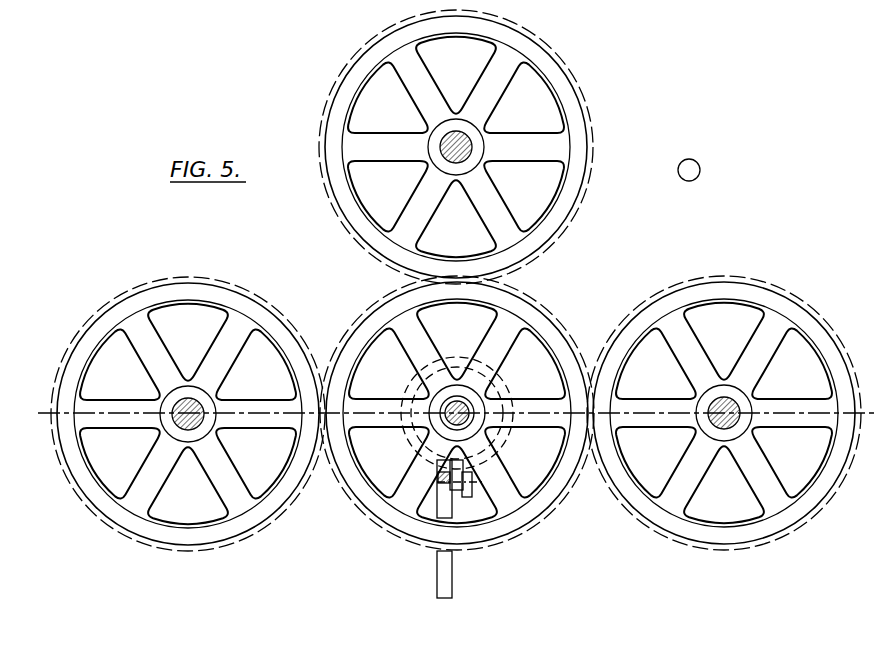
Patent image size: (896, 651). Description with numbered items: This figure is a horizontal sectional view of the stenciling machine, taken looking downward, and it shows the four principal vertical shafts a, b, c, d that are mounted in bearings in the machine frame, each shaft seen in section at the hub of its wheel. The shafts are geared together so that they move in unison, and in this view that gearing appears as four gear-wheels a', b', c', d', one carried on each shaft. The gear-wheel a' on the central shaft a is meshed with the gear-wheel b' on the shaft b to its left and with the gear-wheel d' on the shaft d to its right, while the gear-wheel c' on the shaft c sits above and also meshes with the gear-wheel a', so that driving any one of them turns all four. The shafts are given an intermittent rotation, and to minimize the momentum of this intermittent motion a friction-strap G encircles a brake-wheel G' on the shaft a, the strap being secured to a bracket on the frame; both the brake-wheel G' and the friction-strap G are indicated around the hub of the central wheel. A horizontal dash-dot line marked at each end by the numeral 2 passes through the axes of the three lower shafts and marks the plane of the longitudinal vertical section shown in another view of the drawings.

The section line 2 2 is at (454, 414).
The principal shaft a is at (475, 402).
The gear-wheel a' is at (457, 413).
The principal shaft b is at (203, 408).
The gear-wheel b' is at (188, 414).
The principal shaft c is at (469, 143).
The gear-wheel c' is at (468, 147).
The principal shaft d is at (736, 407).
The gear-wheel d' is at (726, 413).
The friction-strap G is at (466, 413).
The brake-wheel G' is at (445, 419).